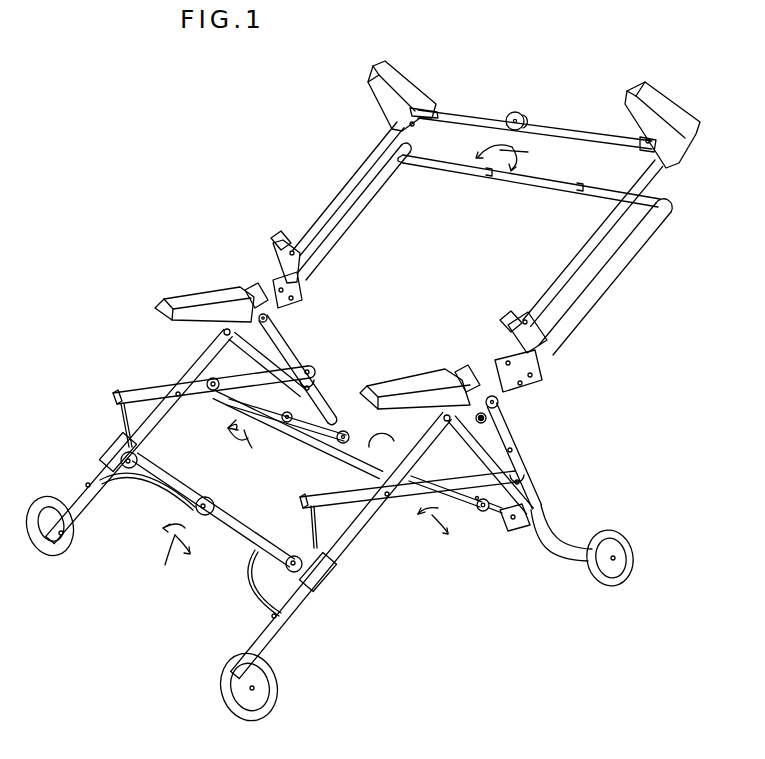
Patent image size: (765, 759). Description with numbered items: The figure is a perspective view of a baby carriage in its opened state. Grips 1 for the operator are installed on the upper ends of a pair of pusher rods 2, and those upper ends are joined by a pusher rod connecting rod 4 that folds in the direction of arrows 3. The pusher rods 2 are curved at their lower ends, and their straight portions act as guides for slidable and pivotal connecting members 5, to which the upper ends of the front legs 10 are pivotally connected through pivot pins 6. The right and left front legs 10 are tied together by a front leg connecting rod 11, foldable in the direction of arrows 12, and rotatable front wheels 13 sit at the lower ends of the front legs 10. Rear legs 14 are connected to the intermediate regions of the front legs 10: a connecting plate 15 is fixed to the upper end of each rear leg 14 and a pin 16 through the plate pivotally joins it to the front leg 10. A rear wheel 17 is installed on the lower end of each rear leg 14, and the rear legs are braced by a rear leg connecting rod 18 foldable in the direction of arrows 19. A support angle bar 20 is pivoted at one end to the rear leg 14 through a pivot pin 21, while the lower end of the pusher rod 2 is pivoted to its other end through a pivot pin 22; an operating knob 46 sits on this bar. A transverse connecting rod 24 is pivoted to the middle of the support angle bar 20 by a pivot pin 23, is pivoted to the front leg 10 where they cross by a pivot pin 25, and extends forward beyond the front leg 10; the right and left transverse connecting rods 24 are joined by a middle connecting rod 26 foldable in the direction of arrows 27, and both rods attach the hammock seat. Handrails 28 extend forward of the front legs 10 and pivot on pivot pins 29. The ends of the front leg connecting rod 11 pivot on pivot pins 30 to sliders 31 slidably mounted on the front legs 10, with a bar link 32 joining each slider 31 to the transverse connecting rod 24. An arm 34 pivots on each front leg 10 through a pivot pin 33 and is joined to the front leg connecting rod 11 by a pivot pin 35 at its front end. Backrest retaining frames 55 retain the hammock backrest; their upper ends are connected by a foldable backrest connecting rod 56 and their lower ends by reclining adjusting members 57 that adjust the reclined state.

The grip 1 is at (407, 87).
The pusher rod 2 is at (358, 176).
The arrows 3 is at (510, 141).
The pusher rod connecting rod 4 is at (494, 118).
The slidable and pivotal connecting member 5 is at (278, 242).
The pivot pin 6 is at (292, 251).
The front leg 10 is at (75, 497).
The front leg connecting rod 11 is at (200, 496).
The arrows 12 is at (166, 553).
The front wheel 13 is at (58, 550).
The rear leg 14 is at (570, 547).
The connecting plate 15 is at (233, 336).
The pin 16 is at (222, 332).
The rear wheel 17 is at (631, 549).
The rear leg connecting rod 18 is at (503, 518).
The arrows 19 is at (449, 514).
The support angle bar 20 is at (274, 337).
The pivot pin 21 is at (310, 387).
The pivot pin 22 is at (267, 318).
The pivot pin 23 is at (313, 364).
The transverse connecting rod 24 is at (144, 390).
The pivot pin 25 is at (178, 396).
The middle connecting rod 26 is at (298, 443).
The arrows 27 is at (278, 420).
The handrail 28 is at (175, 303).
The pivot pin 29 is at (255, 300).
The pivot pin 30 is at (138, 458).
The slider 31 is at (110, 452).
The bar link 32 is at (121, 416).
The pivot pin 33 is at (90, 483).
The arm 34 is at (122, 482).
The pivot pin 35 is at (162, 480).
The operating knob 46 is at (487, 418).
The backrest retaining frame 55 is at (344, 228).
The backrest connecting rod 56 is at (510, 179).
The reclining adjusting member 57 is at (300, 293).